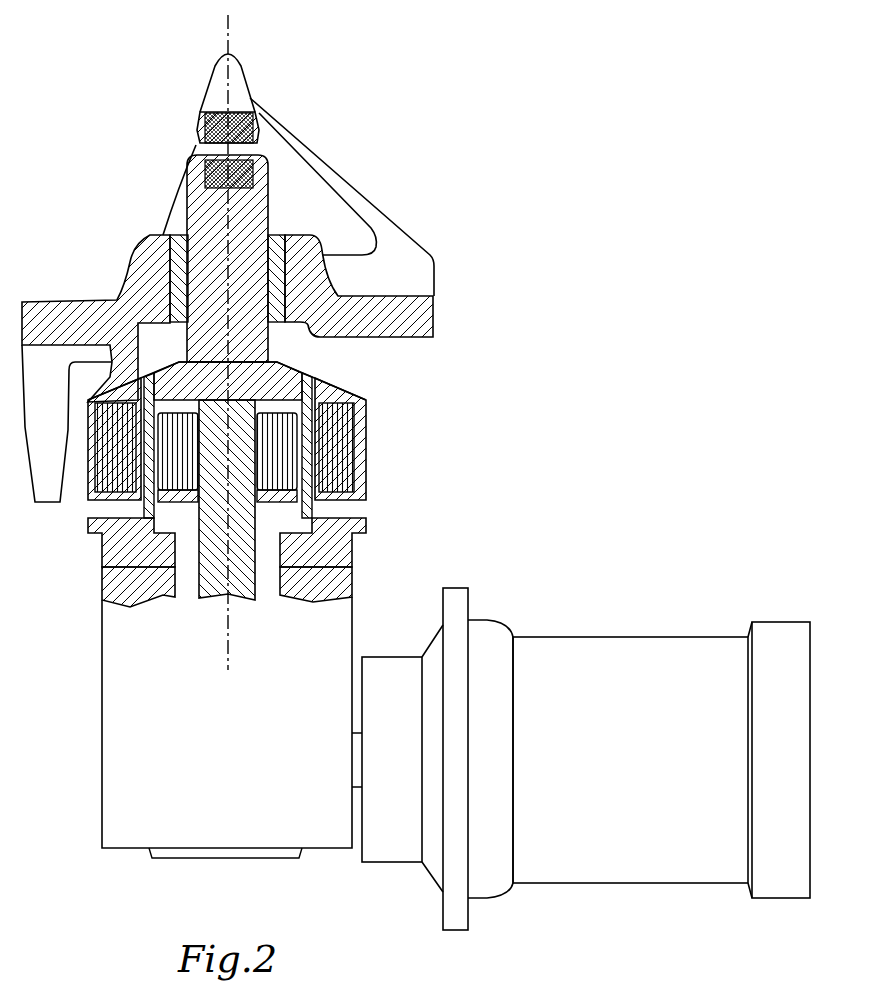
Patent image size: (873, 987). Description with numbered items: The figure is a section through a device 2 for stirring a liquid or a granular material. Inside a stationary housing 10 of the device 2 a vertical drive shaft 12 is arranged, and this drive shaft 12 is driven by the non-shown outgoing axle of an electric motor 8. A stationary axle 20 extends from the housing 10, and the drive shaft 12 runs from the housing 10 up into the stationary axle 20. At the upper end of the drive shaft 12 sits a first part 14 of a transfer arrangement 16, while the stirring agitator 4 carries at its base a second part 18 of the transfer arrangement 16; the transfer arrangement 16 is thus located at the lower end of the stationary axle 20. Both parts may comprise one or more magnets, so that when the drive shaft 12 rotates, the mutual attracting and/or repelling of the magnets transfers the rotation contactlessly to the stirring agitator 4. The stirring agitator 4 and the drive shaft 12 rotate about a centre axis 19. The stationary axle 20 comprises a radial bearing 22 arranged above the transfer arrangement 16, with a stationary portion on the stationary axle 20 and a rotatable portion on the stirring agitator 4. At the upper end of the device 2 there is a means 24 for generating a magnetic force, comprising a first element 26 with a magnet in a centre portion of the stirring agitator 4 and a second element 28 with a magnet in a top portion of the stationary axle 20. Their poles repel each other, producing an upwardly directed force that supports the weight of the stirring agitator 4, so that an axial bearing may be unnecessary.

The device 2 is at (527, 125).
The stirring agitator 4 is at (127, 374).
The electric motor 8 is at (628, 658).
The stationary housing 10 is at (307, 535).
The drive shaft 12 is at (238, 583).
The first part 14 is at (280, 467).
The transfer arrangement 16 is at (360, 378).
The second part 18 is at (345, 425).
The centre axis 19 is at (228, 26).
The stationary axle 20 is at (245, 333).
The radial bearing 22 is at (290, 202).
The means for generating a magnetic force 24 is at (176, 148).
The first element 26 is at (213, 123).
The second element 28 is at (208, 182).